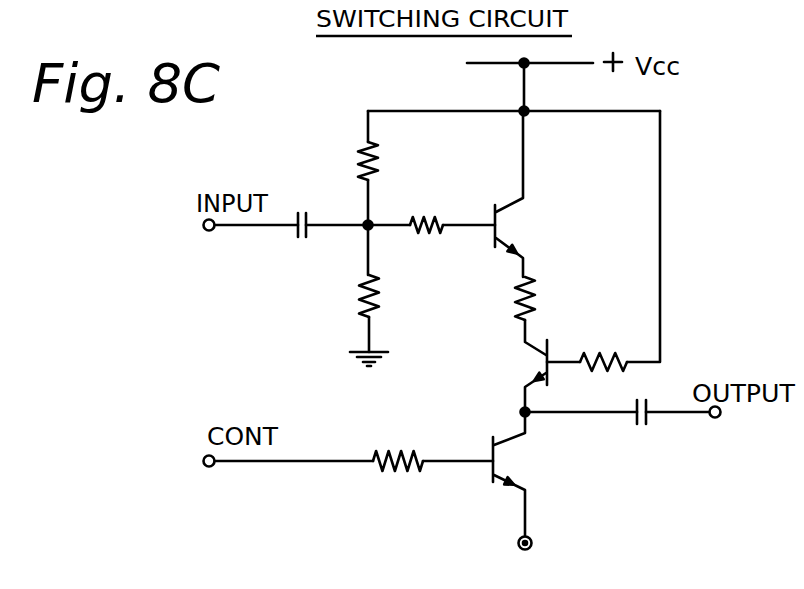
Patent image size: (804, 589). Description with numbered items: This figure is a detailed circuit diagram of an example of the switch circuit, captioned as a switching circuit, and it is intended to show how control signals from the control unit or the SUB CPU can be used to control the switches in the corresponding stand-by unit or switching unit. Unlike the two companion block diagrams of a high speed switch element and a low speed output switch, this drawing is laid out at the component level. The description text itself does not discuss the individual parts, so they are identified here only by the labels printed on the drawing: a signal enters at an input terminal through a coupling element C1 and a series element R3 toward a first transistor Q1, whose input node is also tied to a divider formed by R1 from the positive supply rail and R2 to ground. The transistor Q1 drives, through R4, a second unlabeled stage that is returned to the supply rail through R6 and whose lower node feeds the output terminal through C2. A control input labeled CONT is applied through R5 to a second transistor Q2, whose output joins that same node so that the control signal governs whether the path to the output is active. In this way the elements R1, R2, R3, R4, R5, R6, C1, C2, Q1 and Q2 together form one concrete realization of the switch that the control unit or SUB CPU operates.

The resistor R1 is at (388, 160).
The resistor R2 is at (393, 298).
The resistor R3 is at (433, 210).
The resistor R4 is at (547, 294).
The resistor R5 is at (398, 443).
The resistor R6 is at (603, 344).
The capacitor C1 is at (303, 210).
The capacitor C2 is at (657, 397).
The transistor Q1 is at (525, 194).
The transistor Q2 is at (528, 486).